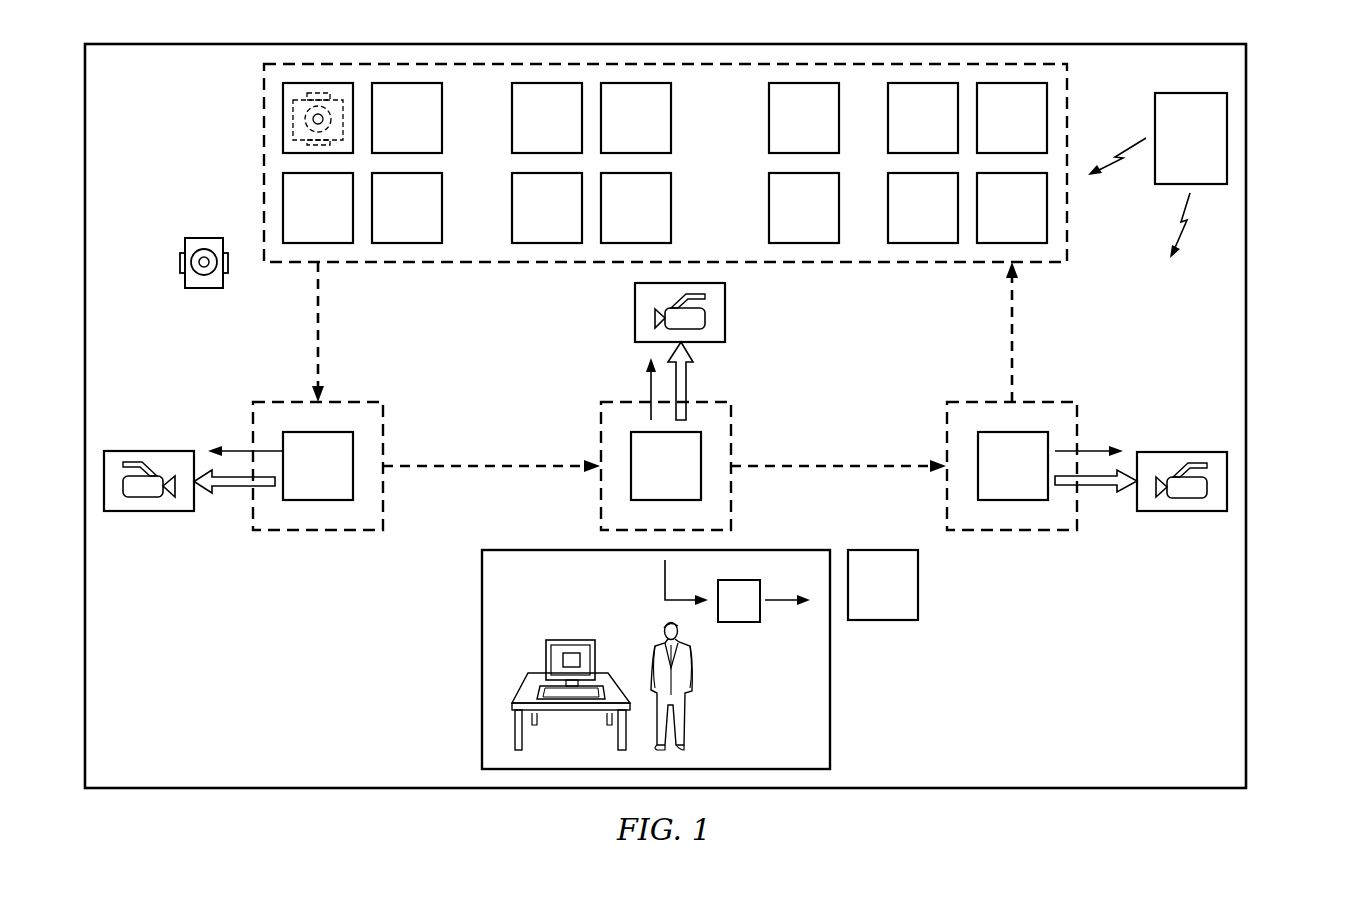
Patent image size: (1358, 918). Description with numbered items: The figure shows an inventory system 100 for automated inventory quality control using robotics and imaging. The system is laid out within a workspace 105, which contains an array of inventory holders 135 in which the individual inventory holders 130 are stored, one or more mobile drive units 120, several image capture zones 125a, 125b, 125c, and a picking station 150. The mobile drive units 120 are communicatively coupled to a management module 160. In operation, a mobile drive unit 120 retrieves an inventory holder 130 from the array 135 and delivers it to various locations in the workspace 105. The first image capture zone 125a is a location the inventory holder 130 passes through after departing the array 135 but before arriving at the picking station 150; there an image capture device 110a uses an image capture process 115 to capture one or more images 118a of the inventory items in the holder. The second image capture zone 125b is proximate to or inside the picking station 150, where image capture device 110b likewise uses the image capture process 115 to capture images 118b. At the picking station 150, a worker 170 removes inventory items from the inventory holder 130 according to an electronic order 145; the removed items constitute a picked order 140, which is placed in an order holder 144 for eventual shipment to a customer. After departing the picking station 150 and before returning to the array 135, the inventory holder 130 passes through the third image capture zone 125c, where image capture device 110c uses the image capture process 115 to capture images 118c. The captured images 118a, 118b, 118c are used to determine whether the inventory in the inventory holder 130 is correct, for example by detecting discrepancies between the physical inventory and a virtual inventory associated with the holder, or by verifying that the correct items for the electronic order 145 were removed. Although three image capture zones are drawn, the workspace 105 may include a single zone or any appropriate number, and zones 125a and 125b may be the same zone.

The inventory system 100 is at (1278, 286).
The workspace 105 is at (152, 98).
The image capture device 110a is at (150, 513).
The image capture device 110b is at (633, 312).
The image capture device 110c is at (1180, 513).
The image capture process 115 is at (232, 489).
The images 118a is at (234, 449).
The images 118b is at (648, 388).
The images 118c is at (1098, 449).
The mobile drive unit 120 is at (204, 237).
The image capture zone 125a is at (314, 544).
The image capture zone 125b is at (590, 424).
The image capture zone 125c is at (1014, 544).
The inventory holder 130 is at (336, 219).
The array of inventory holders 135 is at (255, 124).
The picked order 140 is at (741, 623).
The order holder 144 is at (902, 598).
The electronic order 145 is at (570, 652).
The picking station 150 is at (470, 664).
The management module 160 is at (1210, 150).
The worker 170 is at (690, 710).